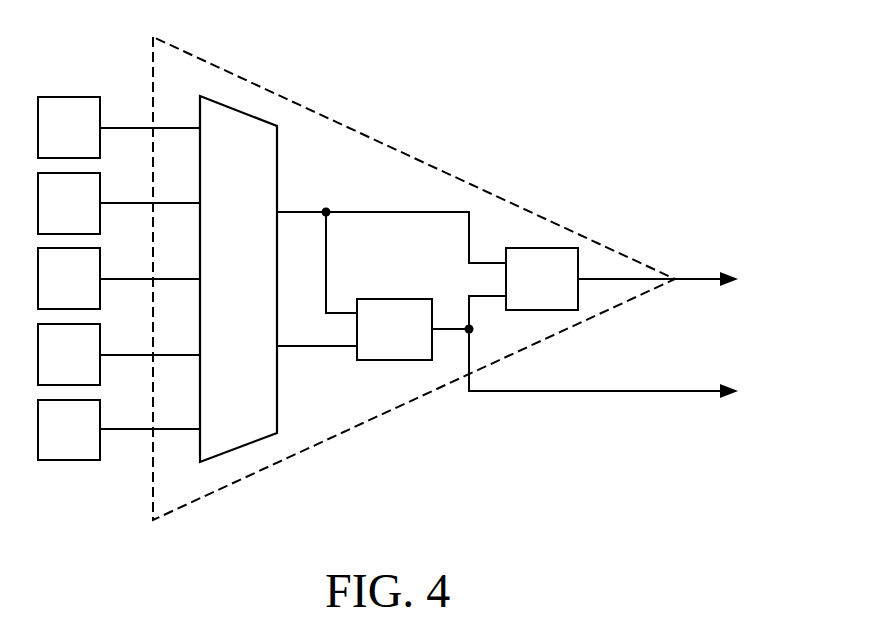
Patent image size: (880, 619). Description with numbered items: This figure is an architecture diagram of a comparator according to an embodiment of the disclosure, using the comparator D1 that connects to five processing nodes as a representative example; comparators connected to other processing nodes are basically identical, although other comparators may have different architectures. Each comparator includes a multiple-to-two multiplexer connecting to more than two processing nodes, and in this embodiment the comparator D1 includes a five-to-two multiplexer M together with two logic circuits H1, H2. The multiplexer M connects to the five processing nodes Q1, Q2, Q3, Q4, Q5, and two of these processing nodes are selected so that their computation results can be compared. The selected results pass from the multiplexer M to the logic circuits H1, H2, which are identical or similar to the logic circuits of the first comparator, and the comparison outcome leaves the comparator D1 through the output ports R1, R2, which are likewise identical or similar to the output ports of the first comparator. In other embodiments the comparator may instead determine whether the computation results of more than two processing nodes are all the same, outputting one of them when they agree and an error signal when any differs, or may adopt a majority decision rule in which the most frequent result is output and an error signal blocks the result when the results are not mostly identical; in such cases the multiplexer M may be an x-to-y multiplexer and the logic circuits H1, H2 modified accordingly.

The processing node Q1 is at (119, 127).
The processing node Q2 is at (119, 203).
The processing node Q3 is at (119, 278).
The processing node Q4 is at (119, 354).
The processing node Q5 is at (119, 430).
The multiplexer M is at (238, 279).
The logic circuit H1 is at (394, 329).
The logic circuit H2 is at (542, 279).
The comparator D1 is at (412, 158).
The output port R1 is at (679, 278).
The output port R2 is at (625, 368).